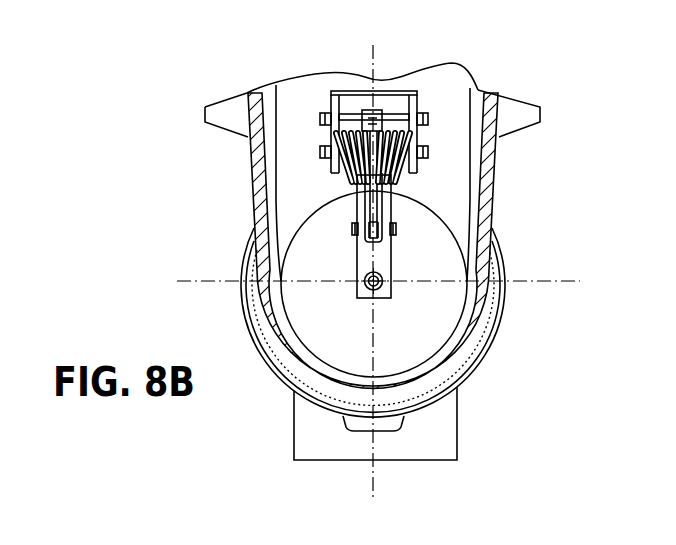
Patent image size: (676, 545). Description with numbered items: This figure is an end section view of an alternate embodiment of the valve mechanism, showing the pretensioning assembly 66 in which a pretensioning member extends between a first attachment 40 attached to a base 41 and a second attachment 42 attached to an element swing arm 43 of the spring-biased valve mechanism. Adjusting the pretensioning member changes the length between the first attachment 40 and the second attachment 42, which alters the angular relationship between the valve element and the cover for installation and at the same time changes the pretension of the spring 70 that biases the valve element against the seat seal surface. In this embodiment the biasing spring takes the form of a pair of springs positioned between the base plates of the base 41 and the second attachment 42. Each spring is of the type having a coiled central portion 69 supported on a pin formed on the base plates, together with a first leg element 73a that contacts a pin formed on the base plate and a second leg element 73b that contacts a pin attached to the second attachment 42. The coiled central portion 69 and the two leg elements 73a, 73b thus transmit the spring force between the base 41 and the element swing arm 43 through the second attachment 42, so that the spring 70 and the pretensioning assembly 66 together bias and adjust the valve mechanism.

The first attachment 40 is at (379, 108).
The base 41 is at (323, 93).
The second attachment 42 is at (396, 231).
The element swing arm 43 is at (391, 284).
The pretensioning assembly 66 is at (372, 197).
The coiled central portion 69 is at (409, 139).
The spring 70 is at (357, 159).
The first leg element 73a is at (336, 122).
The second leg element 73b is at (357, 210).